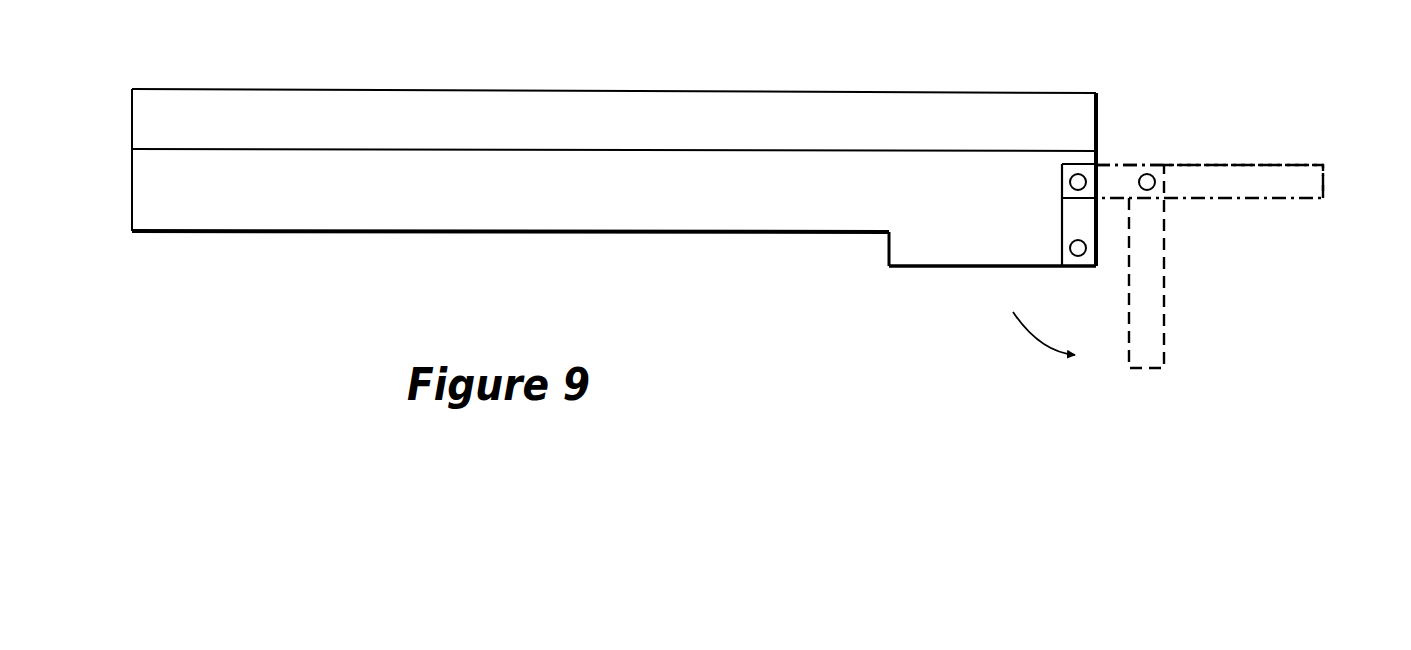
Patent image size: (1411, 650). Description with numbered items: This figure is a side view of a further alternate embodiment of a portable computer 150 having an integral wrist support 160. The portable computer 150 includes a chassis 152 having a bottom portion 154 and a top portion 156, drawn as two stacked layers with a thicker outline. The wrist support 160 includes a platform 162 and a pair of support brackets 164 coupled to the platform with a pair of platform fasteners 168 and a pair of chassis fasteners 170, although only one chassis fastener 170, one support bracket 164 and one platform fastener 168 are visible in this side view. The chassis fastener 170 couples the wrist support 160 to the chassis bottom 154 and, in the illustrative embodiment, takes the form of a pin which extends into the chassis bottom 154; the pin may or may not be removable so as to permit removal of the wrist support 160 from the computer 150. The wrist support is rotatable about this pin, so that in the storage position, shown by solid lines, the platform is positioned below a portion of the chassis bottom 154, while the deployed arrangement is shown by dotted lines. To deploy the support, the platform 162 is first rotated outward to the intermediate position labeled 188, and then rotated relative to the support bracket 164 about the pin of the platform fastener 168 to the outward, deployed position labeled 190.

The portable computer 150 is at (649, 69).
The chassis 152 is at (362, 87).
The bottom portion 154 is at (130, 197).
The top portion 156 is at (130, 120).
The wrist support 160 is at (1227, 135).
The platform 162 is at (1276, 162).
The support bracket 164 is at (1118, 178).
The platform fastener 168 is at (1153, 190).
The chassis fastener 170 is at (1069, 183).
The intermediate position 188 is at (1180, 334).
The deployed position 190 is at (1328, 164).